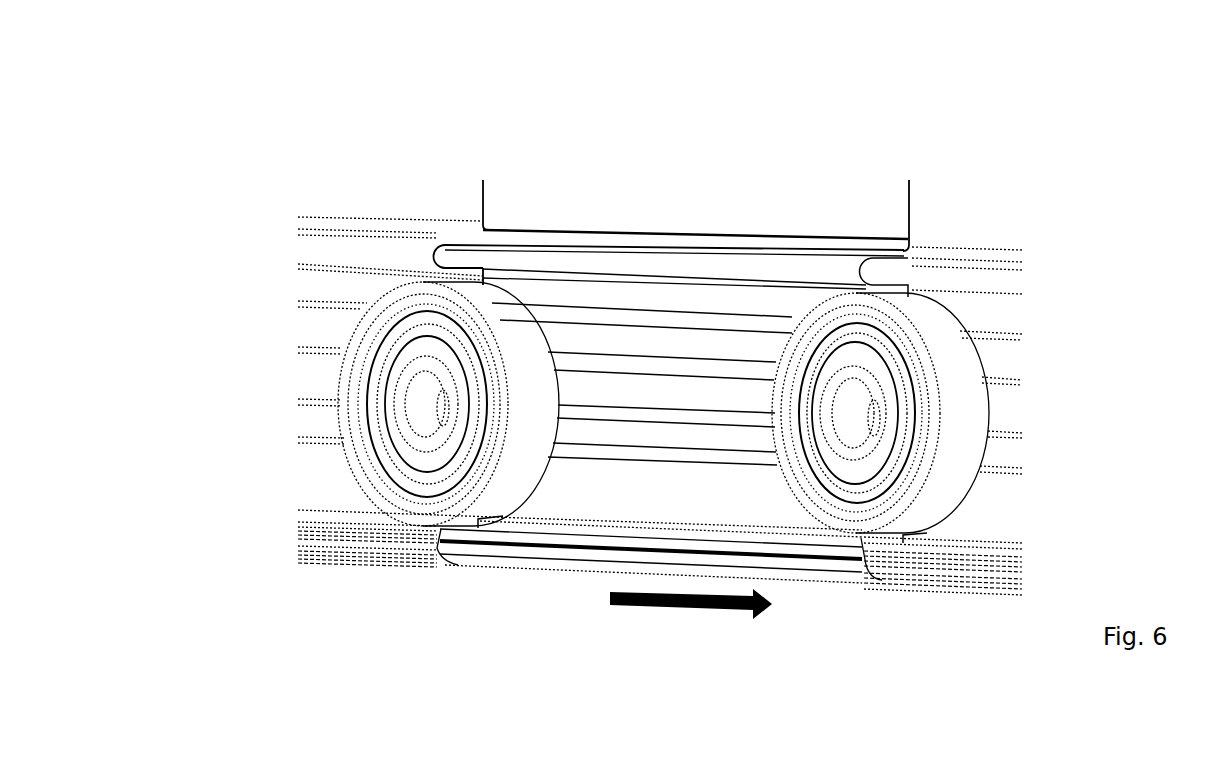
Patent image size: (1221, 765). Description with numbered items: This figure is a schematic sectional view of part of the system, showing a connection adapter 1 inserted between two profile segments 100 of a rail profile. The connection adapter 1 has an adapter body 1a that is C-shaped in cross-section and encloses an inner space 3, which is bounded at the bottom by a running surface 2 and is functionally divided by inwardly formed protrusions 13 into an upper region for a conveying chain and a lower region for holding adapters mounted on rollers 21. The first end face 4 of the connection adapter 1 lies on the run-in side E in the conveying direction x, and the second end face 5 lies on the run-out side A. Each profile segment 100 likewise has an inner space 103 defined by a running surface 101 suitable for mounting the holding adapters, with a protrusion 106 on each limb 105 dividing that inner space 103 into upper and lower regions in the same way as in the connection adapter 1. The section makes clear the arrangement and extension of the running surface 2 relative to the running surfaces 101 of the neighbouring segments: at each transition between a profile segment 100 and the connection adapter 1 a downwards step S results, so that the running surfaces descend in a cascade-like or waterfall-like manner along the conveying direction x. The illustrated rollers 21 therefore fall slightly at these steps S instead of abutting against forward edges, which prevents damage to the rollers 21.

The connection adapter 1 is at (667, 167).
The adapter body 1a is at (763, 235).
The running surface 2 is at (603, 535).
The inner space 3 is at (603, 430).
The first end face 4 is at (482, 174).
The second end face 5 is at (908, 174).
The protrusion 13 is at (586, 262).
The roller 21 is at (345, 400).
The profile segment 100 is at (262, 222).
The running surface 101 is at (340, 520).
The inner space 103 is at (313, 474).
The limb 105 is at (325, 283).
The protrusion 106 is at (357, 252).
The downwards step S is at (481, 528).
The conveying direction x is at (703, 608).